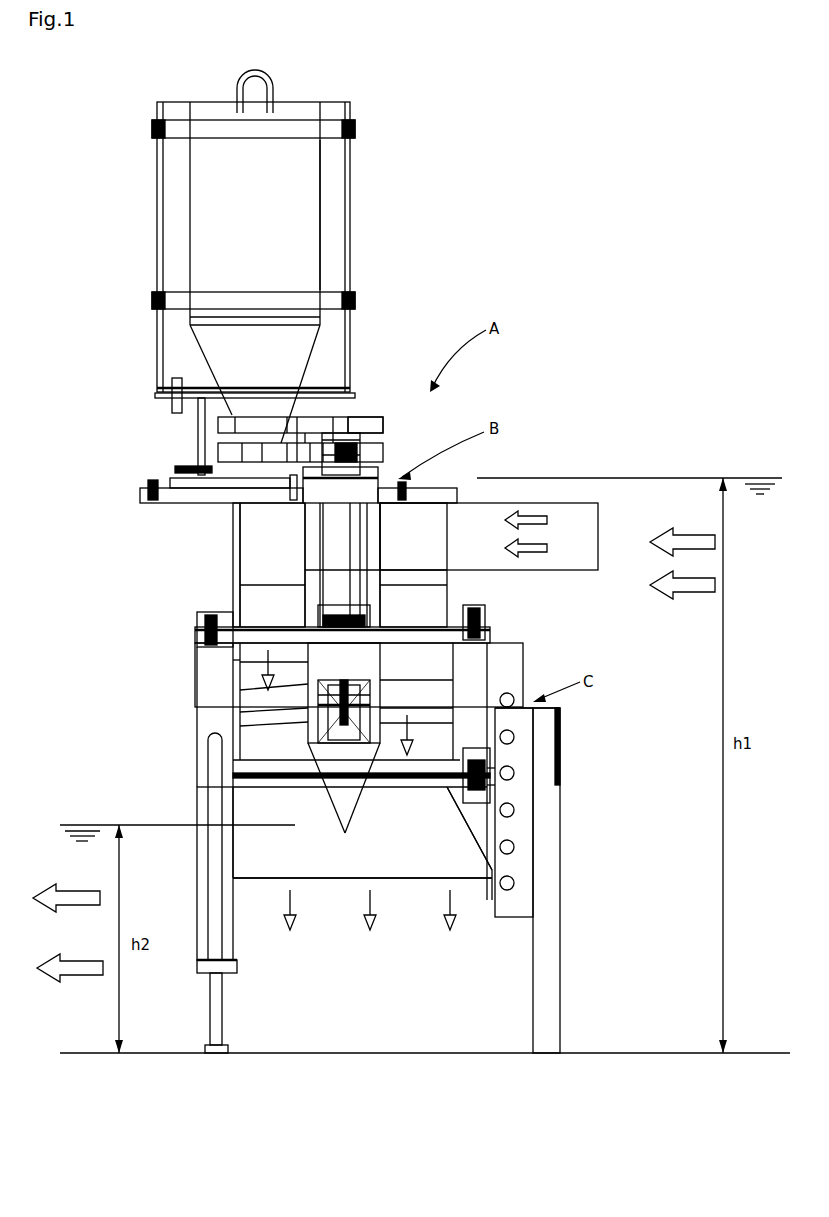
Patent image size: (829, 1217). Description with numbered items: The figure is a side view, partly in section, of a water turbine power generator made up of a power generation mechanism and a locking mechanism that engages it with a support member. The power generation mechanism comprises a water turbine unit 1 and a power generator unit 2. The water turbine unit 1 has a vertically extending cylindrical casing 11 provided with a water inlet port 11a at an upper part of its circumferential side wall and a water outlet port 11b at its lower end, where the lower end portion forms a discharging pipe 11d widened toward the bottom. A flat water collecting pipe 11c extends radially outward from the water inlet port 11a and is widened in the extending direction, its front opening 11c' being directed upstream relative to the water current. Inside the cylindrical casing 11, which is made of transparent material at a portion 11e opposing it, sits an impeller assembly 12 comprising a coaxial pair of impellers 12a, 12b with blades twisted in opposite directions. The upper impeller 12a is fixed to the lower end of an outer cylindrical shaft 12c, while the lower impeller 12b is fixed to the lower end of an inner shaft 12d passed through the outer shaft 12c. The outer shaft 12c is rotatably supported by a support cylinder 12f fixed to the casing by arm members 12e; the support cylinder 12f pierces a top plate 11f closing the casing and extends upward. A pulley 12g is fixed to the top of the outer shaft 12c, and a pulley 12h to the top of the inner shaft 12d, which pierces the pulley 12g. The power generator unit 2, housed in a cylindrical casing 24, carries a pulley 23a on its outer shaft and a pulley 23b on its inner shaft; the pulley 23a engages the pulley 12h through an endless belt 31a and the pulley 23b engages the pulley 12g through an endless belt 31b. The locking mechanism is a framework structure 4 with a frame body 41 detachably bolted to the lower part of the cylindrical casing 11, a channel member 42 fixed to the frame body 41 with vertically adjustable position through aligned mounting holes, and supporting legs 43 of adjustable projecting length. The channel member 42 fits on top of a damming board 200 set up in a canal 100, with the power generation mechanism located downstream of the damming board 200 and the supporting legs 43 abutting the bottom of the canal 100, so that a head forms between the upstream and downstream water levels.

The water turbine unit 1 is at (463, 702).
The power generator unit 2 is at (178, 230).
The framework structure 4 is at (193, 757).
The cylindrical casing 11 is at (233, 575).
The water inlet port 11a is at (450, 533).
The water outlet port 11b is at (390, 878).
The water collecting pipe 11c is at (489, 554).
The front opening 11c' is at (657, 552).
The discharging pipe 11d is at (272, 860).
The transparent portion 11e is at (233, 668).
The top plate 11f is at (447, 490).
The impeller assembly 12 is at (460, 668).
The upper impeller 12a is at (296, 678).
The lower impeller 12b is at (296, 722).
The outer cylindrical shaft 12c is at (355, 521).
The inner shaft 12d is at (337, 418).
The arm members 12e is at (268, 602).
The support cylinder 12f is at (370, 551).
The pulley 12g is at (384, 456).
The pulley 12h is at (384, 426).
The pulley 23a is at (218, 424).
The pulley 23b is at (218, 452).
The cylindrical casing 24 is at (322, 222).
The endless belt 31a is at (282, 415).
The endless belt 31b is at (297, 445).
The frame body 41 is at (210, 690).
The channel member 42 is at (520, 760).
The supporting legs 43 is at (212, 1005).
The canal 100 is at (675, 813).
The damming board 200 is at (545, 932).